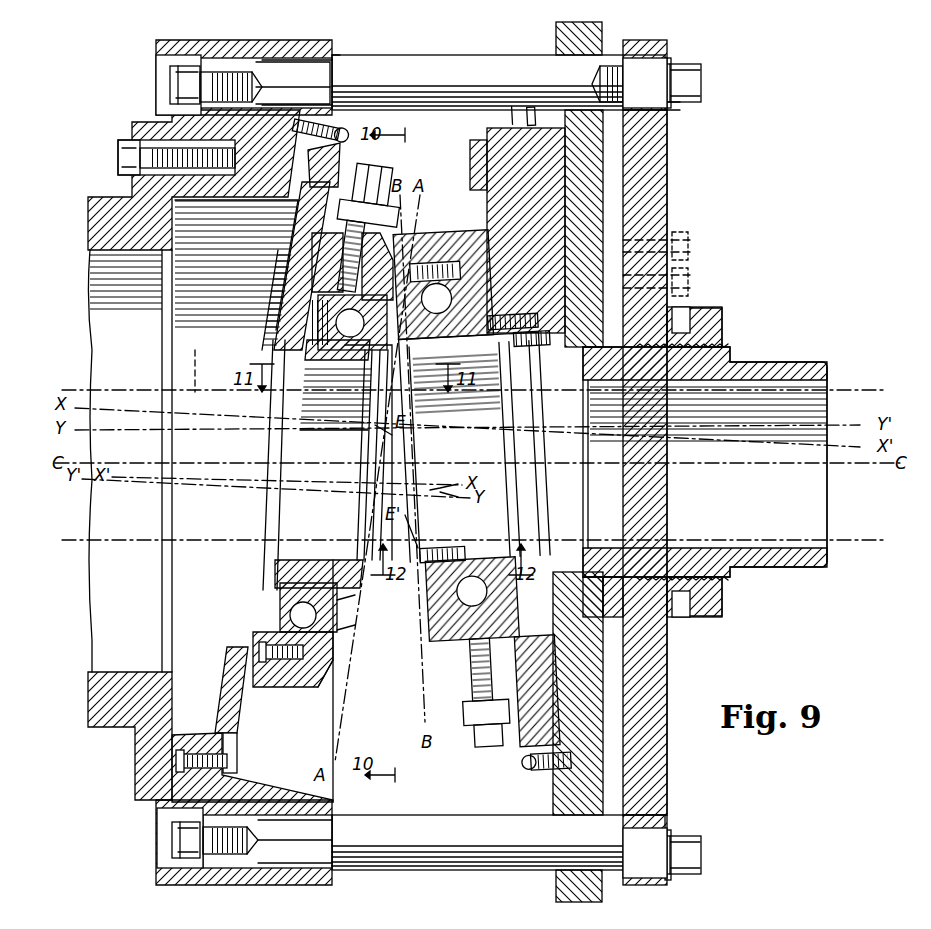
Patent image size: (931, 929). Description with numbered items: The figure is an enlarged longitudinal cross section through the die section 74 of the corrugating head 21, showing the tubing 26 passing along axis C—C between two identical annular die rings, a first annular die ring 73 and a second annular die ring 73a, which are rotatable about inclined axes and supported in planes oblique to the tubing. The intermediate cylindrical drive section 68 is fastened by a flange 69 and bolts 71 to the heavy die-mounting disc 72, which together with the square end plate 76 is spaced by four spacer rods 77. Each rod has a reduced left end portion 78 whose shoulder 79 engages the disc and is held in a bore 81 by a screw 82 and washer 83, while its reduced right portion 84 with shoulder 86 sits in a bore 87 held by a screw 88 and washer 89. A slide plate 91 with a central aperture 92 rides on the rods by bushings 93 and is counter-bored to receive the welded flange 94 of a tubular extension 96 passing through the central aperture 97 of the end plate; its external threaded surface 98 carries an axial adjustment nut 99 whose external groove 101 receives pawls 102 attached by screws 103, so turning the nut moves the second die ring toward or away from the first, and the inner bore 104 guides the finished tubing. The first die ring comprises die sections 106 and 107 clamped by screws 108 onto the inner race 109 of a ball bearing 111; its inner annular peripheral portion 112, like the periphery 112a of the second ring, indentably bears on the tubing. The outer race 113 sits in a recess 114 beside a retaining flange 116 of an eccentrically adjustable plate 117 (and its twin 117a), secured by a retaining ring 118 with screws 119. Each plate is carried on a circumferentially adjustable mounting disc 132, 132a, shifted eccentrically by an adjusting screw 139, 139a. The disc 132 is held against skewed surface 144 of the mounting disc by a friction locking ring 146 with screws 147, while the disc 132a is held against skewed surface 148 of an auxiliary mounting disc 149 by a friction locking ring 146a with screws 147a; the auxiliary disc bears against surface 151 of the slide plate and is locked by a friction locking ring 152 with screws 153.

The corrugating head 21 is at (685, 178).
The tubing 26 is at (194, 368).
The intermediate cylindrical drive section 68 is at (120, 205).
The flange 69 is at (135, 770).
The bolts 71 is at (118, 158).
The die-mounting disc 72 is at (260, 45).
The first annular die ring 73 is at (320, 533).
The second annular die ring 73a is at (485, 529).
The die section 74 is at (347, 50).
The end plate 76 is at (652, 52).
The spacer rods 77 is at (420, 58).
The reduced diameter left end portion 78 is at (318, 58).
The shoulder 79 is at (320, 78).
The bore 81 is at (280, 58).
The screw 82 is at (170, 78).
The washer 83 is at (200, 58).
The reduced diameter portion 84 is at (640, 55).
The shoulder 86 is at (610, 70).
The bore 87 is at (701, 78).
The screw 88 is at (690, 100).
The washer 89 is at (672, 58).
The slide plate 91 is at (560, 24).
The central aperture 92 is at (590, 577).
The bushings 93 is at (556, 48).
The welded flange 94 is at (618, 577).
The tubular extension 96 is at (800, 570).
The central aperture 97 is at (660, 580).
The external threaded surface 98 is at (725, 348).
The axial adjustment nut 99 is at (718, 306).
The external groove 101 is at (705, 622).
The pawls 102 is at (688, 300).
The screws 103 is at (674, 246).
The inner bore 104 is at (770, 548).
The die section 106 is at (334, 422).
The die section 107 is at (336, 397).
The screws 108 is at (330, 575).
The inner race 109 is at (280, 592).
The ball bearing 111 is at (340, 612).
The inner annular peripheral portion 112 is at (365, 545).
The inner annular periphery 112a is at (457, 387).
The outer race 113 is at (259, 650).
The recess 114 is at (340, 636).
The retaining flange 116 is at (333, 660).
The eccentrically adjustable plate 117 is at (290, 670).
The eccentrically adjustable plate 117a is at (450, 236).
The retaining ring 118 is at (290, 296).
The screws 119 is at (245, 650).
The circumferentially adjustable mounting disc 132 is at (228, 700).
The circumferentially adjustable mounting disc 132a is at (478, 175).
The adjusting screw 139 is at (378, 175).
The adjusting screw 139a is at (478, 748).
The skewed surface 144 is at (265, 512).
The friction locking ring 146 is at (240, 752).
The friction locking ring 146a is at (490, 120).
The screws 147 is at (240, 765).
The screws 147a is at (512, 774).
The skewed surface 148 is at (487, 194).
The auxiliary mounting disc 149 is at (549, 112).
The surface 151 is at (530, 122).
The friction locking ring 152 is at (512, 318).
The screws 153 is at (523, 342).